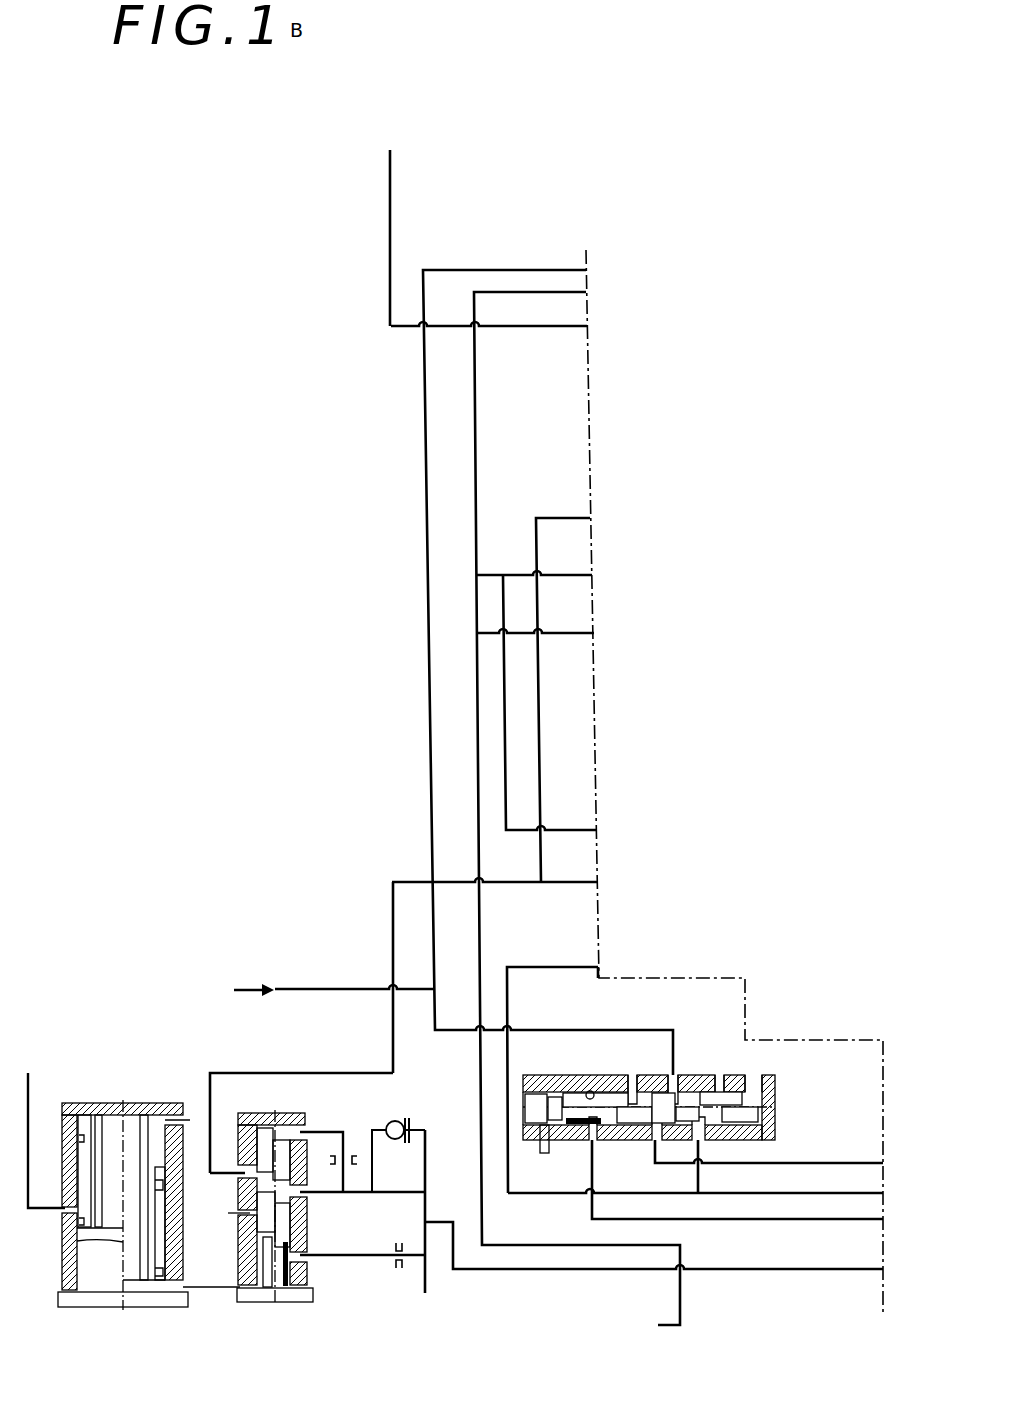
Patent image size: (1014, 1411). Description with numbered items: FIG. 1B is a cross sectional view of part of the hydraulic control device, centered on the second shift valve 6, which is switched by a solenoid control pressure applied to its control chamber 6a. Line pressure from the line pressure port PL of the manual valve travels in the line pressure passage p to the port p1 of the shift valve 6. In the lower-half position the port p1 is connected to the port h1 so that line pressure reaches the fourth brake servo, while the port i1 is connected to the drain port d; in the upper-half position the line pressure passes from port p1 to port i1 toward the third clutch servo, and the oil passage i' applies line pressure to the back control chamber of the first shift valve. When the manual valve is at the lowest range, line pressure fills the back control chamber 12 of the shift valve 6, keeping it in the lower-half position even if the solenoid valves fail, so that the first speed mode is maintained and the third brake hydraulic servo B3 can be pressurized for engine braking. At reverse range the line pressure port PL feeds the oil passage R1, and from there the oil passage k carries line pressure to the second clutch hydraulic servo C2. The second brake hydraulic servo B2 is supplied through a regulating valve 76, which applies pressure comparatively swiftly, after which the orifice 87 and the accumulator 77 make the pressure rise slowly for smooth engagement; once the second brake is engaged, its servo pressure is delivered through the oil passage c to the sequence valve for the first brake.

The third brake hydraulic servo B3 is at (470, 201).
The second brake hydraulic servo B2 is at (428, 1249).
The second clutch hydraulic servo C2 is at (623, 1327).
The line pressure port PL is at (233, 992).
The oil passage R1 is at (478, 502).
The oil passage k is at (479, 836).
The line pressure passage p is at (417, 989).
The drain port d is at (628, 1073).
The 2-3 shift valve 6 is at (692, 1050).
The control chamber 6a is at (757, 1076).
The port p1 is at (670, 1070).
The port h1 is at (650, 1142).
The port i1 is at (700, 1142).
The oil passage i' is at (695, 1105).
The back control chamber 12 is at (577, 1146).
The oil passage c is at (872, 1270).
The orifice 87 is at (337, 1157).
The accumulator 77 is at (110, 1312).
The regulating valve 76 is at (281, 1310).